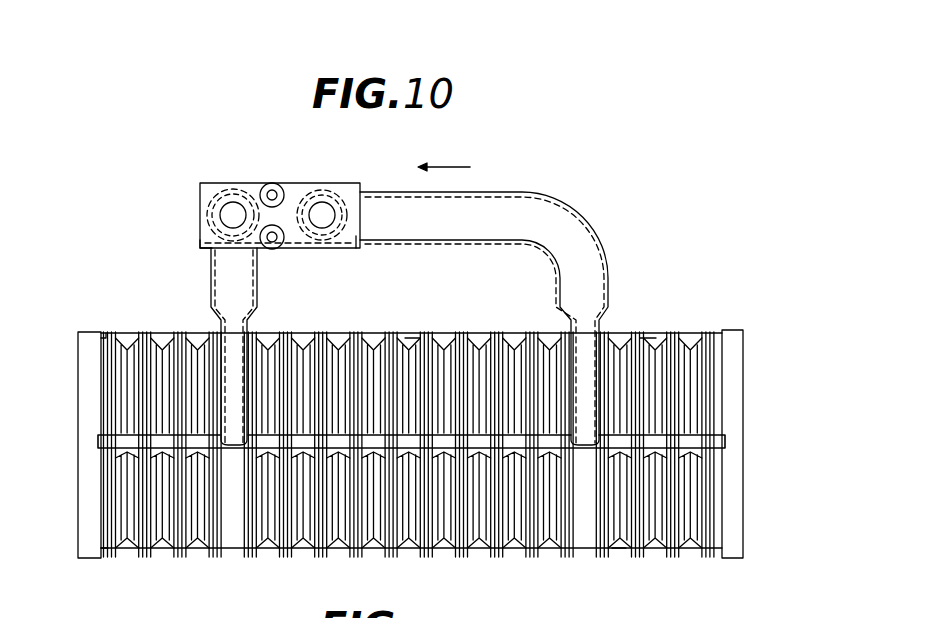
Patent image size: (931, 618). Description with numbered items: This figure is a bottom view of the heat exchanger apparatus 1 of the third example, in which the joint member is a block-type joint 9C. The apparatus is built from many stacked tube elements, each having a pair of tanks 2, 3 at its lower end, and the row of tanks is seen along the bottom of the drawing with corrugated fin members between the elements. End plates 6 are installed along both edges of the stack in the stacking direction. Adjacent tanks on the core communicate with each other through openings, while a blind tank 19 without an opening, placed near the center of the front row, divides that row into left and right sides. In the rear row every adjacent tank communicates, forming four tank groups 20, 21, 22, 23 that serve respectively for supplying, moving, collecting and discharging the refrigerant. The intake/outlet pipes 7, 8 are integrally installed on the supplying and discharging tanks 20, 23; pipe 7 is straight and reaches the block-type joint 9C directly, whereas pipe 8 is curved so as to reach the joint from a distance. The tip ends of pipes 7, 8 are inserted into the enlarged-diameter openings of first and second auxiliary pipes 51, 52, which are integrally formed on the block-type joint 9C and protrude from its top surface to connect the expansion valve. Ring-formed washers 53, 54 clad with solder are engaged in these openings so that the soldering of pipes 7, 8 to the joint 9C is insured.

The heat exchanger apparatus 1 is at (745, 413).
The tank 2 is at (332, 352).
The tank 3 is at (337, 548).
The end plate 6 is at (80, 380).
The intake/outlet pipe 7 is at (248, 282).
The intake/outlet pipe 8 is at (574, 228).
The block-type joint 9C is at (295, 192).
The blind tank 19 is at (413, 347).
The tank for supplying refrigerant 20 is at (125, 343).
The tank for moving refrigerant 21 is at (125, 544).
The tank for collecting refrigerant 22 is at (622, 546).
The tank for discharging refrigerant 23 is at (648, 346).
The first auxiliary pipe 51 is at (248, 194).
The second auxiliary pipe 52 is at (343, 188).
The ring-formed washer 53 is at (362, 245).
The ring-formed washer 54 is at (210, 252).